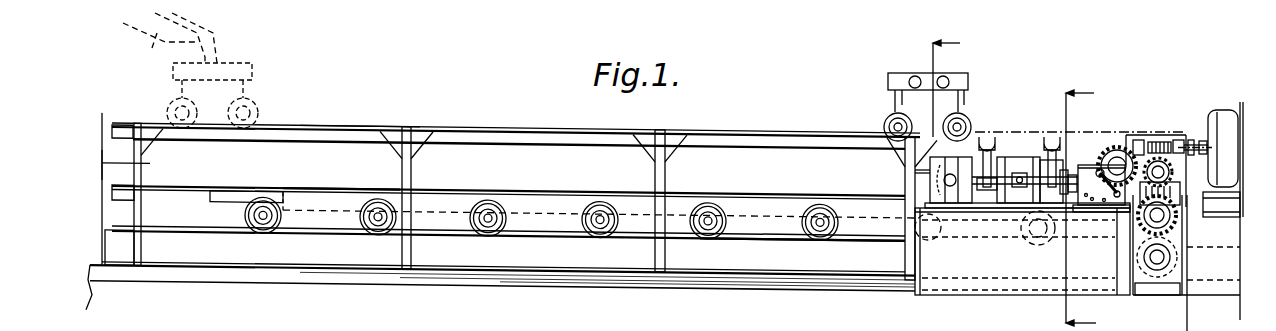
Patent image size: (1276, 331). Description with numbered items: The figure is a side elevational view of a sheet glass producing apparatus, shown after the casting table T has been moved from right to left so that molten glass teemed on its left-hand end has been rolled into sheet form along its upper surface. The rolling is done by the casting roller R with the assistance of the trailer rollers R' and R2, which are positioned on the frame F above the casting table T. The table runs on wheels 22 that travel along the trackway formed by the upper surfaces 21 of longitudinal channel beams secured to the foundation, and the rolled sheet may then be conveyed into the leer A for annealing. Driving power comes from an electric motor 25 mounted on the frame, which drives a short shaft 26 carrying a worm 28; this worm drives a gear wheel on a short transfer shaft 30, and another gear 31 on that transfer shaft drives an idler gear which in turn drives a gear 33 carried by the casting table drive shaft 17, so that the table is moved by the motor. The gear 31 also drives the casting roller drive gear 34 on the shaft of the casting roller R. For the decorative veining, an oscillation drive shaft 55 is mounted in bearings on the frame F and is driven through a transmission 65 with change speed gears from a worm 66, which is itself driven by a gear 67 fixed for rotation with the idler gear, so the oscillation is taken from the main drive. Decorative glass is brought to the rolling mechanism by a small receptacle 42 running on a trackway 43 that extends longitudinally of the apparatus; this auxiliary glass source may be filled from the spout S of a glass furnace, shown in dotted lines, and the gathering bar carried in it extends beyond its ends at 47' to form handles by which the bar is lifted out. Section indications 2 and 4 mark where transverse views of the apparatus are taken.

The spout S is at (170, 41).
The small receptacle 42 is at (223, 92).
The trackway 43 is at (350, 126).
The leer A is at (133, 165).
The casting table T is at (312, 186).
The wheels 22 is at (597, 202).
The upper surfaces 21 is at (852, 237).
The section line 2 is at (953, 85).
The section line 4 is at (1087, 207).
The trailer roller R2 is at (937, 175).
The handles 47' is at (1003, 149).
The trailer roller R' is at (1030, 156).
The casting roller R is at (1101, 159).
The oscillation drive shaft 55 is at (1068, 178).
The transmission 65 is at (1090, 200).
The casting roller drive gear 34 is at (1113, 148).
The worm 28 is at (1156, 141).
The transfer shaft 30 is at (1167, 172).
The gear 31 is at (1173, 163).
The worm 66 is at (1171, 193).
The shaft 26 is at (1189, 144).
The electric motor 25 is at (1219, 118).
The gear 67 is at (1173, 228).
The casting table drive shaft 17 is at (1150, 257).
The gear 33 is at (1173, 263).
The frame F is at (997, 209).